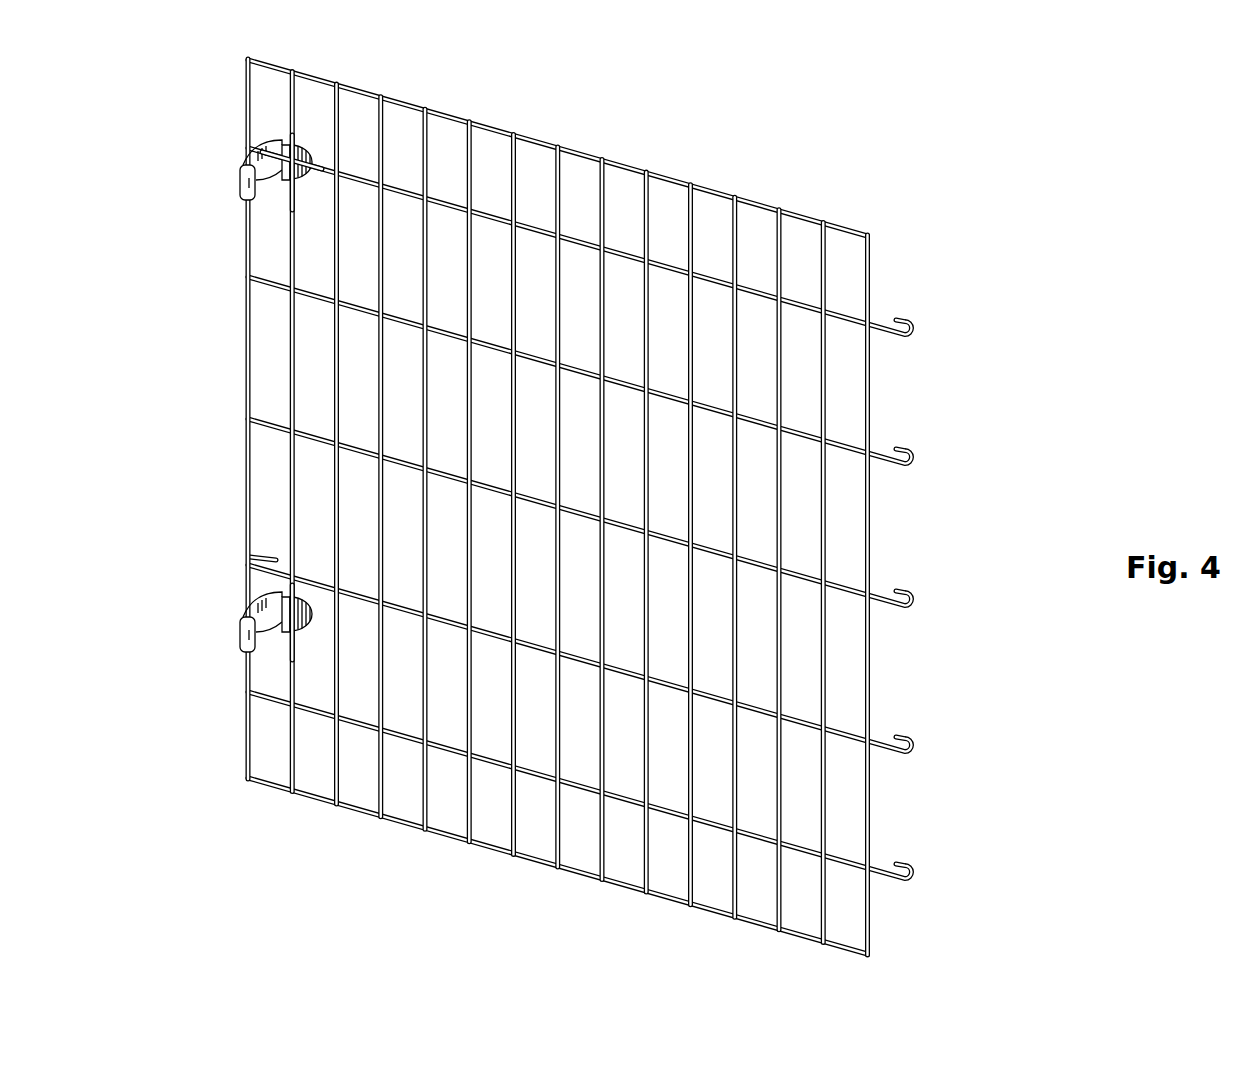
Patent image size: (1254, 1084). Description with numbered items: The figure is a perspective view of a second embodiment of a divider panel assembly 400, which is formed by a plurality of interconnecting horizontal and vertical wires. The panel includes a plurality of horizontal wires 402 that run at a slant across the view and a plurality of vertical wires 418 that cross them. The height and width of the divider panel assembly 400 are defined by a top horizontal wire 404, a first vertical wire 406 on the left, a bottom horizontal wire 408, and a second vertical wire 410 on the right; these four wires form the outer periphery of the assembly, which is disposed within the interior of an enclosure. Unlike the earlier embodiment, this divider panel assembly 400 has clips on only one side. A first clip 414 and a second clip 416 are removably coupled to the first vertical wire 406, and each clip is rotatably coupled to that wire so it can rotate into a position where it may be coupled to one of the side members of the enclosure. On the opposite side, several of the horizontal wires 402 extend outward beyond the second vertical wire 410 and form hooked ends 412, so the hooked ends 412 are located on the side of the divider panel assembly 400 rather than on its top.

The divider panel assembly 400 is at (610, 496).
The horizontal wires 402 is at (661, 258).
The top horizontal wire 404 is at (542, 137).
The first vertical wire 406 is at (248, 398).
The bottom horizontal wire 408 is at (493, 852).
The second vertical wire 410 is at (868, 540).
The hooked ends 412 is at (914, 330).
The first clip 414 is at (240, 183).
The second clip 416 is at (240, 633).
The vertical wires 418 is at (735, 228).